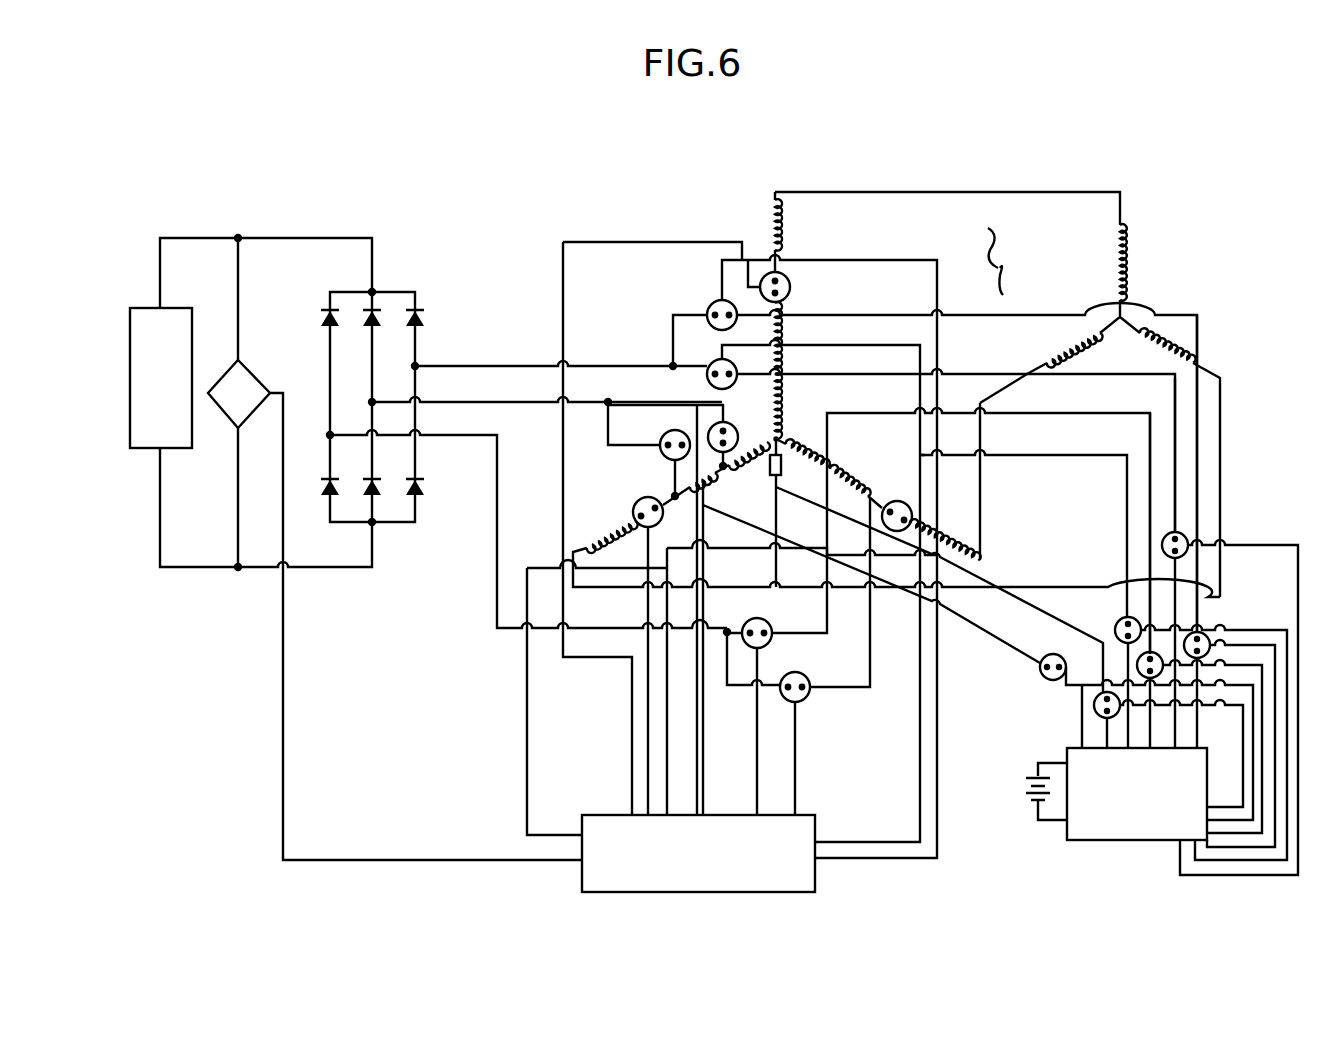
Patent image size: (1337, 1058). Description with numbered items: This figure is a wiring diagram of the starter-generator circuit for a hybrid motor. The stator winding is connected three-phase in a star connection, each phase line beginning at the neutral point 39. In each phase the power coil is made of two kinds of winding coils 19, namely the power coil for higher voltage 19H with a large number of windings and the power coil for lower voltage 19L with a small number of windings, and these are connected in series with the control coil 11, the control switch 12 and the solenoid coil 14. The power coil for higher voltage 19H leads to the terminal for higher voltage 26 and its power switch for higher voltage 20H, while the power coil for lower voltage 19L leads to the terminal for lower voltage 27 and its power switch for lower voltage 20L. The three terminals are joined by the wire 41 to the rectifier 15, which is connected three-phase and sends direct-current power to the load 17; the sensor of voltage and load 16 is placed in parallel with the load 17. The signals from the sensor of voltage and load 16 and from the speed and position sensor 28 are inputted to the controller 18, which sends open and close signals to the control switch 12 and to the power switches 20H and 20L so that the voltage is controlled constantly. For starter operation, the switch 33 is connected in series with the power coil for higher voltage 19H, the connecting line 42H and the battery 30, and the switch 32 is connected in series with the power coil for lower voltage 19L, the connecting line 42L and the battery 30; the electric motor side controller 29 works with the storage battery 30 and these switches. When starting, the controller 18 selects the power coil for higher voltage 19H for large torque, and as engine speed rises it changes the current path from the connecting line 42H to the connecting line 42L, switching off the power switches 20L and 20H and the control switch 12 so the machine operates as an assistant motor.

The control coil 11 is at (771, 215).
The control switch 12 is at (791, 284).
The solenoid coil 14 is at (1138, 243).
The rectifier 15 is at (410, 285).
The sensor of voltage and load 16 is at (226, 407).
The load 17 is at (148, 386).
The controller 18 is at (678, 868).
The power coil winding coils 19 is at (1010, 261).
The power coil for higher voltage 19H is at (780, 318).
The power coil for lower voltage 19L is at (782, 373).
The power switch for higher voltage 20H is at (712, 302).
The power switch for lower voltage 20L is at (710, 366).
The terminal for higher voltage 26 is at (790, 310).
The terminal for lower voltage 27 is at (784, 378).
The speed and position sensor 28 is at (781, 468).
The electric motor side controller 29 is at (1125, 810).
The battery 30 is at (1030, 802).
The switch 32 is at (1188, 540).
The switch 33 is at (1117, 615).
The neutral point 39 is at (785, 436).
The wire 41 is at (460, 364).
The connecting line 42H is at (1197, 334).
The connecting line 42L is at (1178, 417).